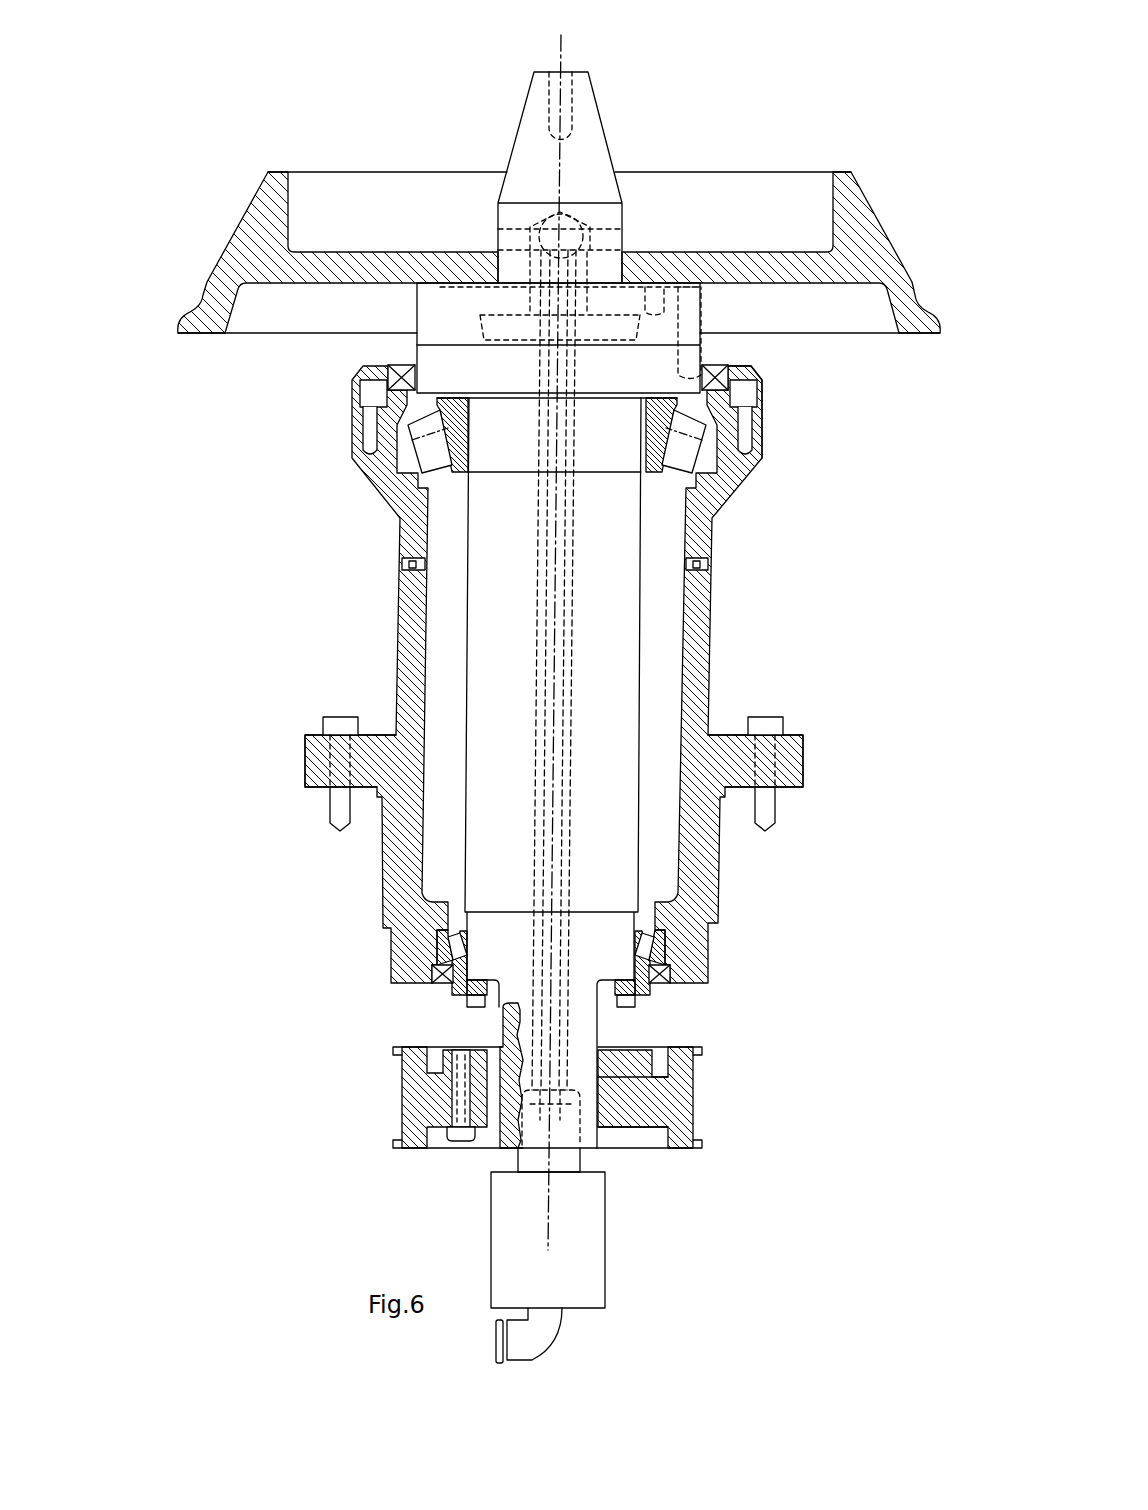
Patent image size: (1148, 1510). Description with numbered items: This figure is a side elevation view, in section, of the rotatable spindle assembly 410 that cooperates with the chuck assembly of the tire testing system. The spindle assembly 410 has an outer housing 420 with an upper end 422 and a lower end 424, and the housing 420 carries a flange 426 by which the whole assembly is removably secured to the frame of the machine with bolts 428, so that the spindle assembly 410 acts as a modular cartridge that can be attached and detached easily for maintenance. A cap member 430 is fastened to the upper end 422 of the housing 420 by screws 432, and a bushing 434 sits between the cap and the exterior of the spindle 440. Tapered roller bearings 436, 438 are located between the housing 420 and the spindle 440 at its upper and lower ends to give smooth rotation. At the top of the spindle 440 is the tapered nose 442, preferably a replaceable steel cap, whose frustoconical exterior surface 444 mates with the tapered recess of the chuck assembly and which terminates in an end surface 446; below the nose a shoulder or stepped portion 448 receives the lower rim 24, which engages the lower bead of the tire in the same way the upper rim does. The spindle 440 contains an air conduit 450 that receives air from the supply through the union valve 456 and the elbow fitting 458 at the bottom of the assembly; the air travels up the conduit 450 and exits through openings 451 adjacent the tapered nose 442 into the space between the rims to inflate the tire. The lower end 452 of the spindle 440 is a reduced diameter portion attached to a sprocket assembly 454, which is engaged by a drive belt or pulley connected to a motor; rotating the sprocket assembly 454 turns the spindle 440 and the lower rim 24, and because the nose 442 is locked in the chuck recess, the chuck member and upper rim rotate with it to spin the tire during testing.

The lower rim 24 is at (858, 247).
The spindle assembly 410 is at (497, 646).
The outer housing 420 is at (702, 610).
The upper end 422 is at (765, 430).
The lower end 424 is at (703, 967).
The flange 426 is at (790, 765).
The bolts 428 is at (768, 803).
The cap member 430 is at (763, 395).
The screws 432 is at (743, 384).
The bushing 434 is at (402, 360).
The tapered roller bearing 436 is at (722, 478).
The tapered roller bearing 438 is at (650, 943).
The spindle 440 is at (612, 657).
The tapered nose 442 is at (544, 148).
The exterior surface 444 is at (603, 108).
The end surface 446 is at (578, 70).
The stepped portion 448 is at (432, 285).
The air conduit 450 is at (563, 537).
The openings 451 is at (618, 238).
The lower end 452 is at (578, 1020).
The sprocket assembly 454 is at (673, 1102).
The union valve 456 is at (580, 1237).
The elbow fitting 458 is at (537, 1340).